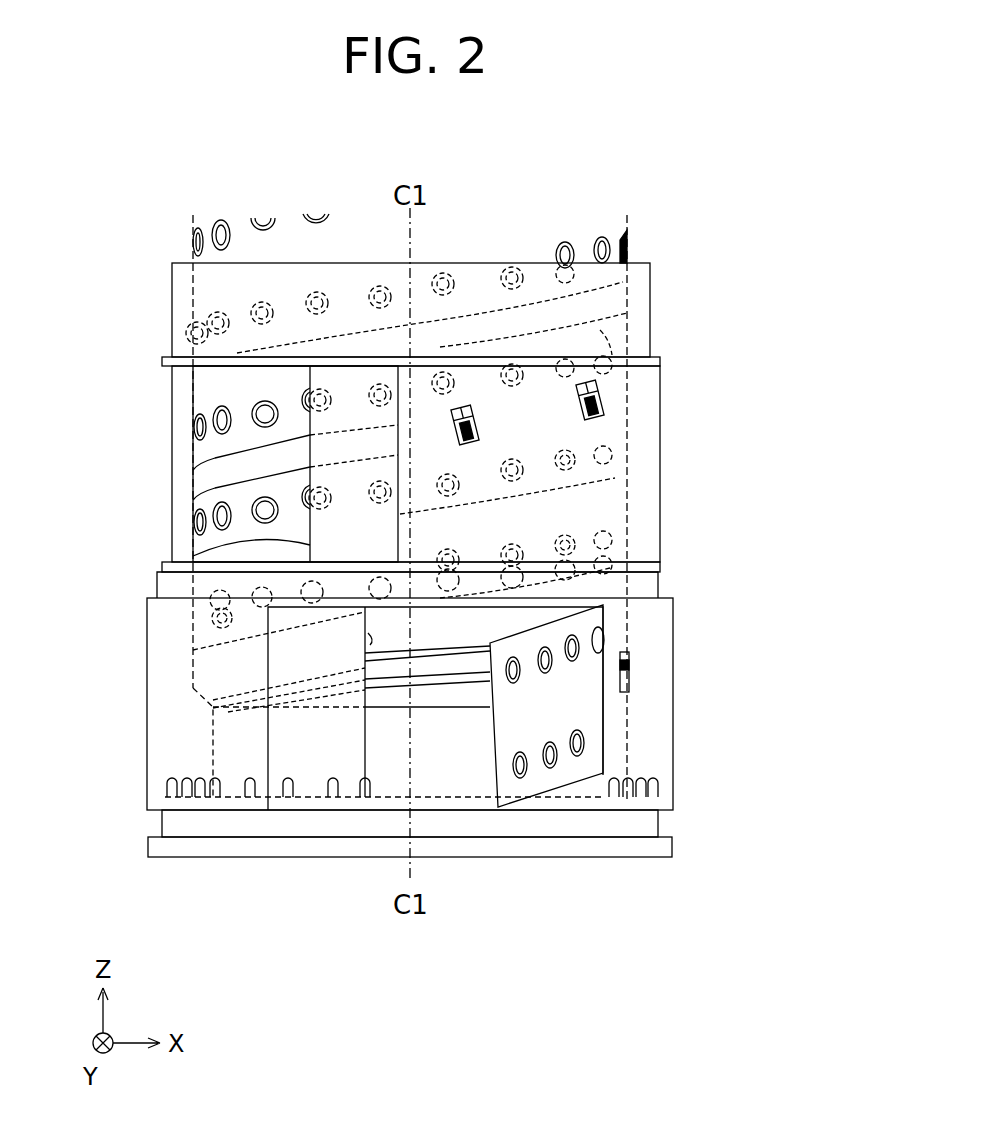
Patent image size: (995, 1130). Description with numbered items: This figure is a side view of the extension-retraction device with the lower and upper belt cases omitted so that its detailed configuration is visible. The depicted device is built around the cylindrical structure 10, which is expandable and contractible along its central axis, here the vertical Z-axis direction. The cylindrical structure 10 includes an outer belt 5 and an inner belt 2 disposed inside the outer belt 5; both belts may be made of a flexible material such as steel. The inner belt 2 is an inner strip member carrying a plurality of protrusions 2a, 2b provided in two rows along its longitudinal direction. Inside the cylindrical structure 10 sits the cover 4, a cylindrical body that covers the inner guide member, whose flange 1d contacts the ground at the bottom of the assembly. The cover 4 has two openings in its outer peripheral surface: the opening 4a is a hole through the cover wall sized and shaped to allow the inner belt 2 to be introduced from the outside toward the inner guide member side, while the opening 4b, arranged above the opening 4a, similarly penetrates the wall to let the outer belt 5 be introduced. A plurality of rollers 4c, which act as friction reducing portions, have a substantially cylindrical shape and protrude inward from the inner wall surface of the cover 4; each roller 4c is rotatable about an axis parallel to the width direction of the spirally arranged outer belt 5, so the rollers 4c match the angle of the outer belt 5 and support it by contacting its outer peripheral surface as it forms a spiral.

The cylindrical structure 10 is at (683, 217).
The outer belt 5 is at (183, 346).
The cover 4 is at (660, 450).
The opening 4a is at (368, 633).
The opening 4b is at (305, 540).
The roller 4c is at (598, 392).
The inner belt 2 is at (205, 386).
The protrusions 2a is at (600, 635).
The protrusions 2b is at (578, 755).
The flange 1d is at (283, 845).